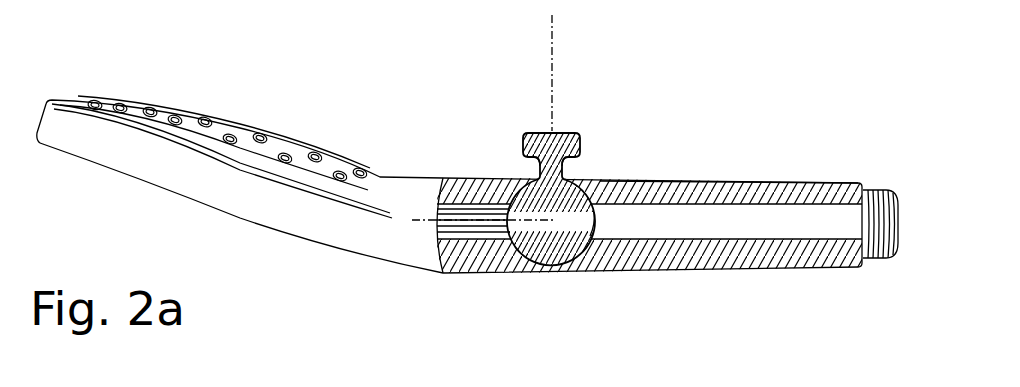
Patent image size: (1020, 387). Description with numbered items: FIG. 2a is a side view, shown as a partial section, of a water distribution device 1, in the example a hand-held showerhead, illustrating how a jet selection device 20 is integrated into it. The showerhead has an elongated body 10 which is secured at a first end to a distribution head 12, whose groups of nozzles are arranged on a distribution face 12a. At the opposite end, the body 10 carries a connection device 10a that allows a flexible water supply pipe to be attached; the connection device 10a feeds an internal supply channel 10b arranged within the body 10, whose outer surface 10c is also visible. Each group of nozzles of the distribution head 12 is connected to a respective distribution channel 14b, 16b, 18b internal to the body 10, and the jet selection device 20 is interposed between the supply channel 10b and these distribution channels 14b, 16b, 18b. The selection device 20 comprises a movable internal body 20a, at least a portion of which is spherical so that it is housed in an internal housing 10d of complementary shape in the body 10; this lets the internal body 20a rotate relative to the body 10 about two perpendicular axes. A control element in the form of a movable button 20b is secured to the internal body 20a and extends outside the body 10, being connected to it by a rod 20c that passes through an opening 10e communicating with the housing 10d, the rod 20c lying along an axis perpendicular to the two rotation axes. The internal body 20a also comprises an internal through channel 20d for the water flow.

The water distribution device 1 is at (462, 182).
The body 10 is at (667, 232).
The connection device 10a is at (876, 268).
The internal supply channel 10b is at (642, 222).
The outer surface 10c is at (731, 177).
The internal housing 10d is at (603, 224).
The opening 10e is at (572, 173).
The distribution head 12 is at (235, 150).
The distribution face 12a is at (62, 92).
The distribution channel 14b is at (477, 235).
The distribution channel 16b is at (437, 222).
The distribution channel 18b is at (410, 235).
The jet selection device 20 is at (546, 177).
The movable internal body 20a is at (545, 248).
The movable button 20b is at (540, 132).
The rod 20c is at (530, 165).
The internal through channel 20d is at (561, 222).